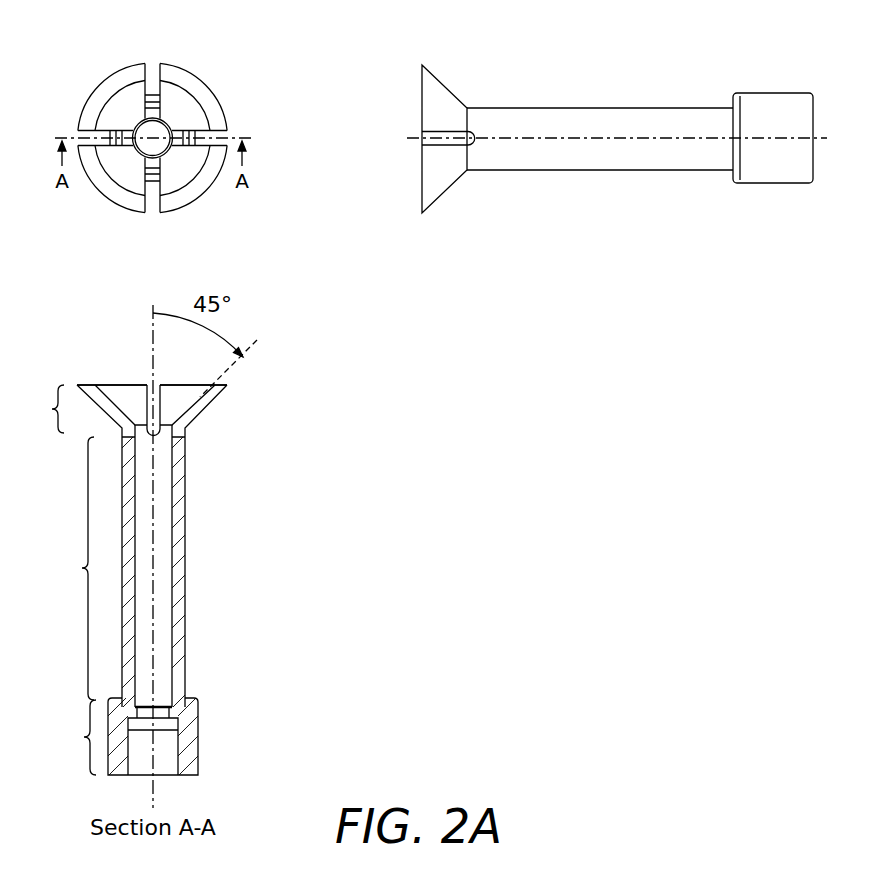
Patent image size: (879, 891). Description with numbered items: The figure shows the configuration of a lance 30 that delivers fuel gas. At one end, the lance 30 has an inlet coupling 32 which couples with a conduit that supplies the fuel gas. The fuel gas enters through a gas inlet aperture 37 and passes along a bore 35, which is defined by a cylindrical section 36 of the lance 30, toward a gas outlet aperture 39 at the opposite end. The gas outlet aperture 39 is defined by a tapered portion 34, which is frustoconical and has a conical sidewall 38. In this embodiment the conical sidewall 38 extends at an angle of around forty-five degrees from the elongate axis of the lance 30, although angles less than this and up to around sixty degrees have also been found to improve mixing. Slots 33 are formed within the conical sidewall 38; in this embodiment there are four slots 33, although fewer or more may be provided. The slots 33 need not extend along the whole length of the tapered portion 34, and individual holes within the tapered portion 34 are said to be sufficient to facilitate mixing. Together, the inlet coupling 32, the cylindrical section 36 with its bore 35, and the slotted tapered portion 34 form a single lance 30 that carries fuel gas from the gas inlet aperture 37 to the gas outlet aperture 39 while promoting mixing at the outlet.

The lance 30 is at (609, 218).
The inlet coupling 32 is at (123, 736).
The slots 33 is at (153, 71).
The tapered portion 34 is at (42, 409).
The bore 35 is at (161, 606).
The cylindrical section 36 is at (116, 572).
The gas inlet aperture 37 is at (171, 708).
The conical sidewall 38 is at (101, 82).
The gas outlet aperture 39 is at (120, 373).